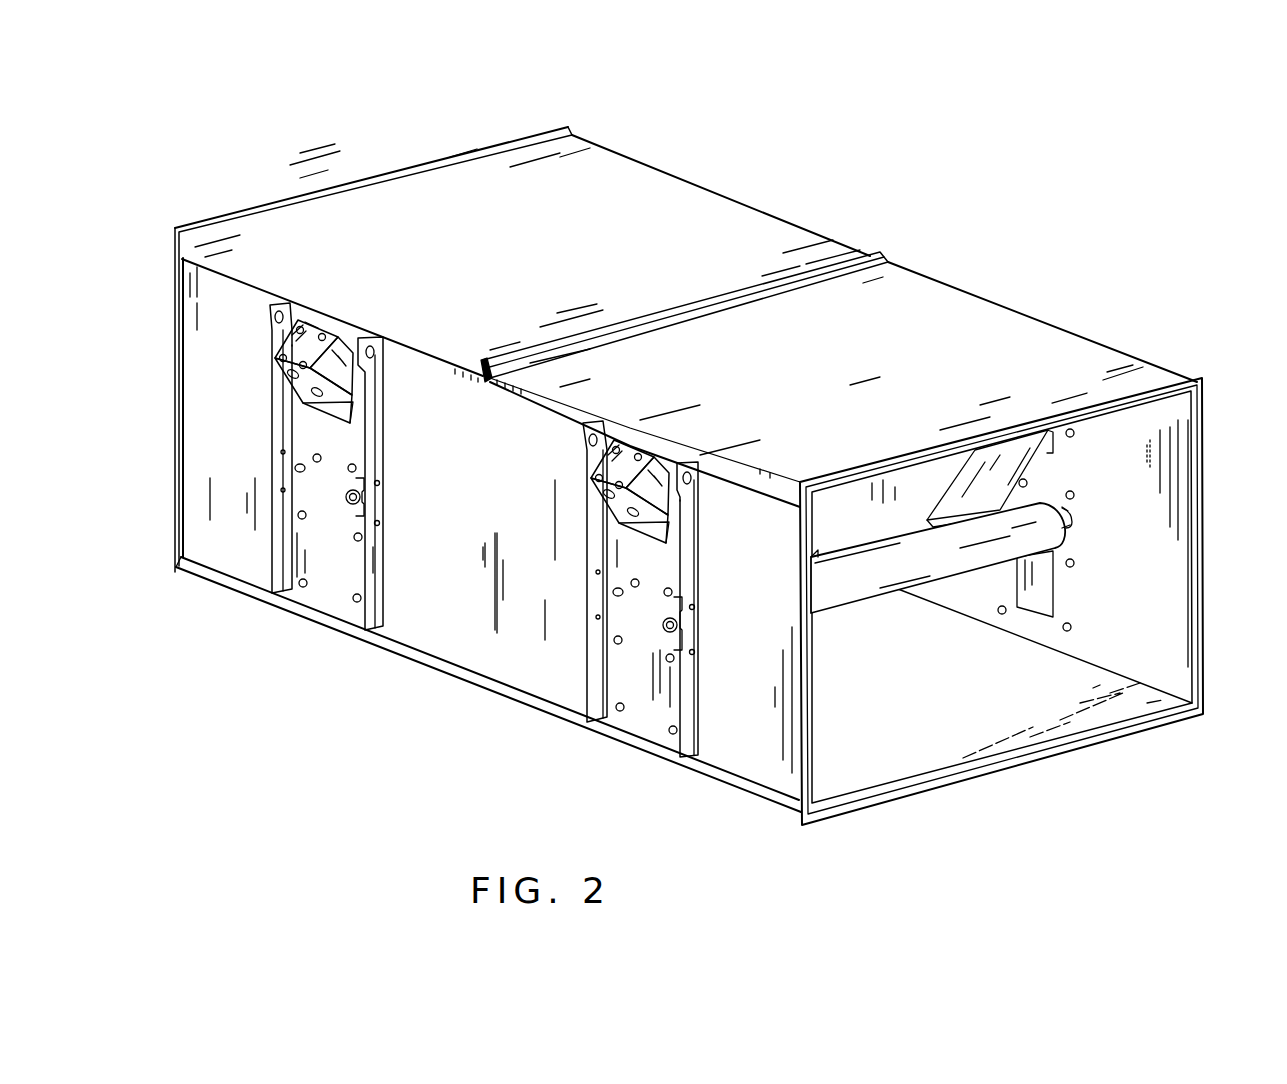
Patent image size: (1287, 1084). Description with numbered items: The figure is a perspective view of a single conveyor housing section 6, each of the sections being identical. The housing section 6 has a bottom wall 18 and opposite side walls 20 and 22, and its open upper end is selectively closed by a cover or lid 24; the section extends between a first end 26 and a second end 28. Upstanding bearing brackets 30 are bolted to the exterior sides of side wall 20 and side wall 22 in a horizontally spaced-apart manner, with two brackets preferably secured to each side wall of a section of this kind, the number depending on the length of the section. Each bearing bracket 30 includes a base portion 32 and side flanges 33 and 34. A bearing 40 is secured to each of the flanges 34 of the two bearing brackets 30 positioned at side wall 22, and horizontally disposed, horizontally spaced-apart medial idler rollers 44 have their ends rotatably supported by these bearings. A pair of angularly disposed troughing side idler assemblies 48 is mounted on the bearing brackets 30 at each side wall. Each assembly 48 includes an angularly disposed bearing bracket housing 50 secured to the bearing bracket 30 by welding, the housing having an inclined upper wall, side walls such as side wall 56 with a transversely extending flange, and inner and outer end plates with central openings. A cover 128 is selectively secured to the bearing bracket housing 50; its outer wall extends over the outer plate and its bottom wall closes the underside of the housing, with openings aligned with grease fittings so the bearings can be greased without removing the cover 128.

The conveyor housing section 6 is at (783, 205).
The bottom wall 18 is at (990, 727).
The side wall 20 is at (1147, 543).
The side wall 22 is at (745, 731).
The cover or lid 24 is at (965, 327).
The first end 26 is at (1100, 765).
The second end 28 is at (167, 297).
The bearing bracket 30 is at (388, 457).
The base portion 32 is at (342, 569).
The side flange 33 is at (280, 470).
The side flange 34 is at (377, 507).
The bearing 40 is at (363, 490).
The medial idler roller 44 is at (865, 585).
The troughing side idler assembly 48 is at (345, 342).
The bearing bracket housing 50 is at (332, 373).
The side wall 56 is at (655, 510).
The cover 128 is at (312, 331).